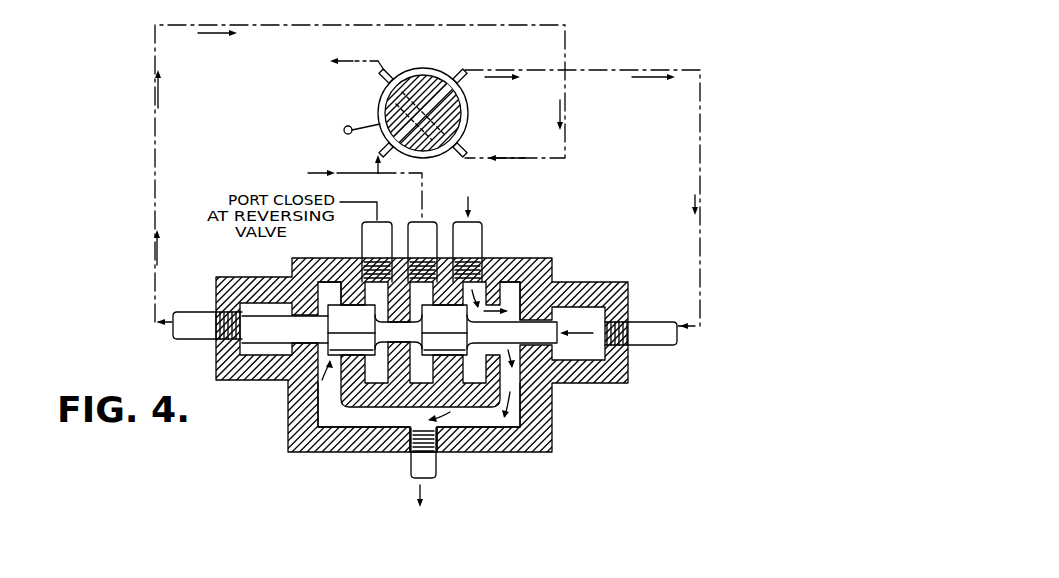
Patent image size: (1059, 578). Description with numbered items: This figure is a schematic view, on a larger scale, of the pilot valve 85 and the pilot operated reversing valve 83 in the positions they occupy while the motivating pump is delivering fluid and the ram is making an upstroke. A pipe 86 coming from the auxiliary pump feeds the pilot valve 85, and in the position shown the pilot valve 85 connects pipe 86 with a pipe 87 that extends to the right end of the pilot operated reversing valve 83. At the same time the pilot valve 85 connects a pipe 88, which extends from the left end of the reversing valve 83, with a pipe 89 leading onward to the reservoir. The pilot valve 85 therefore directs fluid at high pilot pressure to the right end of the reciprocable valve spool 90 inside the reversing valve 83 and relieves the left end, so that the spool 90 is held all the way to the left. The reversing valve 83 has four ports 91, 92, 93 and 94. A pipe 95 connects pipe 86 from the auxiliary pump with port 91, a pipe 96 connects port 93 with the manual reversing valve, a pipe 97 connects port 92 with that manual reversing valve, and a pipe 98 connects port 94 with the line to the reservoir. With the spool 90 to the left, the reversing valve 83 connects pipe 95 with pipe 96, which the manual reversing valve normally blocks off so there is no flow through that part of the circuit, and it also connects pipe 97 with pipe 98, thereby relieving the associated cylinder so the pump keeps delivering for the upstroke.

The pilot operated reversing valve 83 is at (566, 280).
The pilot valve 85 is at (469, 108).
The pipe 86 is at (380, 150).
The pipe 87 is at (590, 70).
The pipe 88 is at (568, 108).
The pipe 89 is at (385, 74).
The valve spool 90 is at (328, 360).
The port 91 is at (406, 223).
The port 92 is at (511, 262).
The port 93 is at (366, 288).
The port 94 is at (405, 433).
The pipe 95 is at (428, 234).
The pipe 96 is at (364, 247).
The pipe 97 is at (482, 242).
The pipe 98 is at (433, 468).